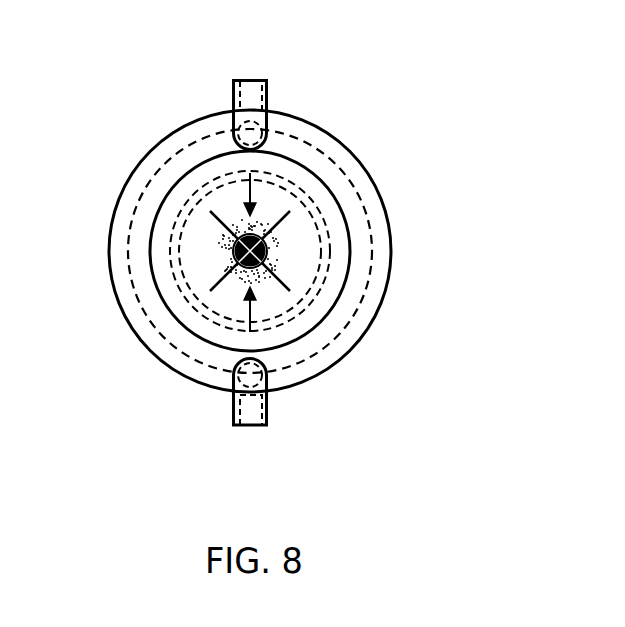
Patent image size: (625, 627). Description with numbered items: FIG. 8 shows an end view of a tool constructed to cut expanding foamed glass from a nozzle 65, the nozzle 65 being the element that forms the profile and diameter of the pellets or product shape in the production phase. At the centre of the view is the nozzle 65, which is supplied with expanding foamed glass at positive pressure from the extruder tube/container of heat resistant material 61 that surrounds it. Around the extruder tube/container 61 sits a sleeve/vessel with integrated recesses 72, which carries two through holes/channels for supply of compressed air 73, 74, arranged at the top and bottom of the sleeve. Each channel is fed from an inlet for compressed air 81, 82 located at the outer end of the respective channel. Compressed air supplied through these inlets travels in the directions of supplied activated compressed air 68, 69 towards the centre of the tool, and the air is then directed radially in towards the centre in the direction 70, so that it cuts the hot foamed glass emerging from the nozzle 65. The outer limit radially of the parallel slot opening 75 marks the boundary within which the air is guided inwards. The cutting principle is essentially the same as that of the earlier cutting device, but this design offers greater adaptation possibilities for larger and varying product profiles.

The extruder tube/container of heat resistant material 61 is at (168, 292).
The nozzle 65 is at (281, 248).
The direction of supplied activated compressed air 68 is at (256, 192).
The direction of supplied activated compressed air 69 is at (256, 313).
The direction of activated compressed air radially in towards the centre 70 is at (284, 283).
The sleeve/vessel with integrated recesses 72 is at (318, 380).
The through hole/channel for supply of compressed air 73 is at (237, 123).
The through hole/channel for supply of compressed air 74 is at (237, 376).
The outer limit radially of the parallel slot opening 75 is at (233, 237).
The inlet for compressed air 81 is at (252, 80).
The inlet for compressed air 82 is at (255, 426).